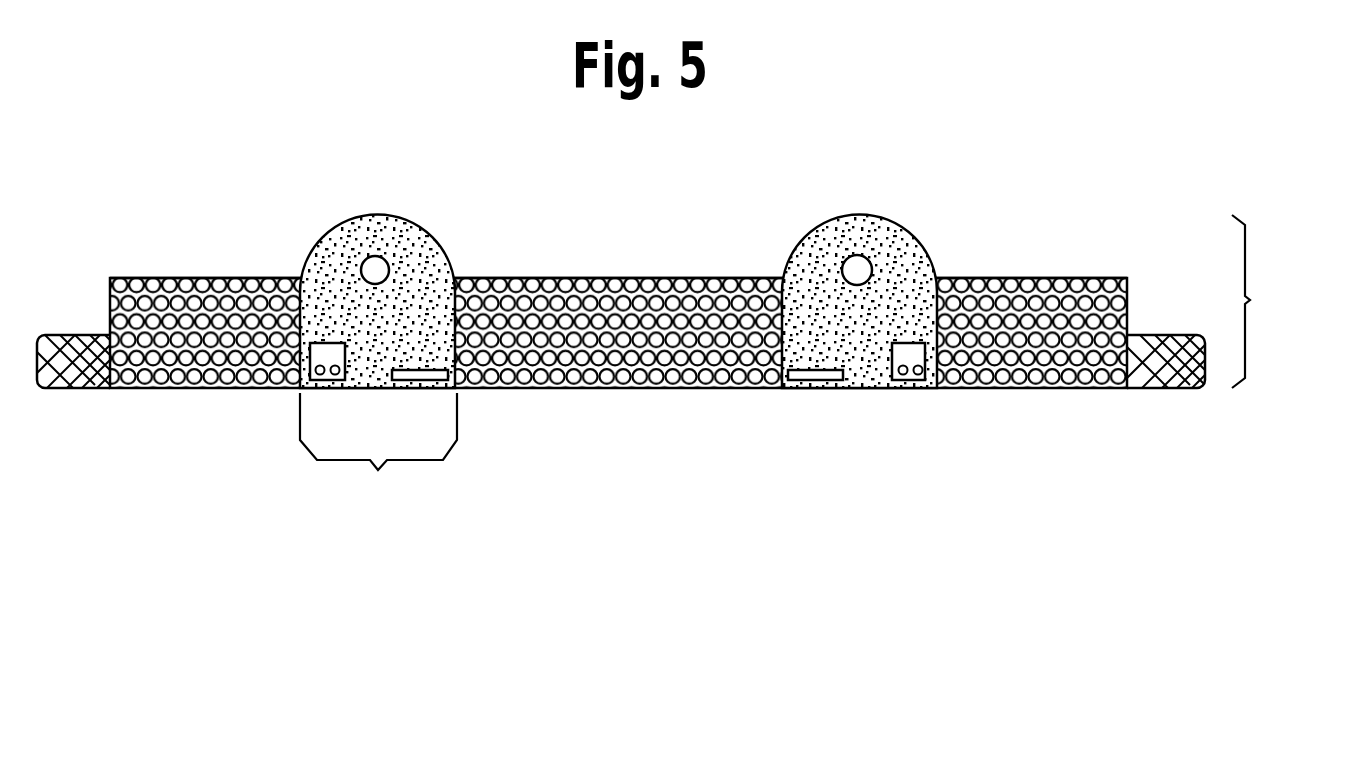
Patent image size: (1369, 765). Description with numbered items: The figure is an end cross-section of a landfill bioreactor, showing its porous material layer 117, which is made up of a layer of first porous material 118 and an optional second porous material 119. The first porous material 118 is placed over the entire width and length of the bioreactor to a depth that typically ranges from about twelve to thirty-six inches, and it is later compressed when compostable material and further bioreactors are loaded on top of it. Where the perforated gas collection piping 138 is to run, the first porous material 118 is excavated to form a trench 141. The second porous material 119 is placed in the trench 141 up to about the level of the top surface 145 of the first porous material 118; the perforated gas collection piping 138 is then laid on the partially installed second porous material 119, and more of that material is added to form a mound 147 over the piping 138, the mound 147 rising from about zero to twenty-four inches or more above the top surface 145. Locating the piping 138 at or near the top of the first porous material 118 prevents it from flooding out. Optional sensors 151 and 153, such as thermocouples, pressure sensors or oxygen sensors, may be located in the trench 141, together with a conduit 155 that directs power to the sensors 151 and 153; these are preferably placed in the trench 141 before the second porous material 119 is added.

The porous material layer 117 is at (1250, 302).
The first porous material 118 is at (1053, 353).
The second porous material 119 is at (906, 243).
The perforated gas collection piping 138 is at (377, 265).
The trench 141 is at (378, 470).
The top surface 145 is at (618, 277).
The mound 147 is at (424, 226).
The sensor 151 is at (317, 388).
The sensor 153 is at (333, 390).
The conduit 155 is at (423, 390).